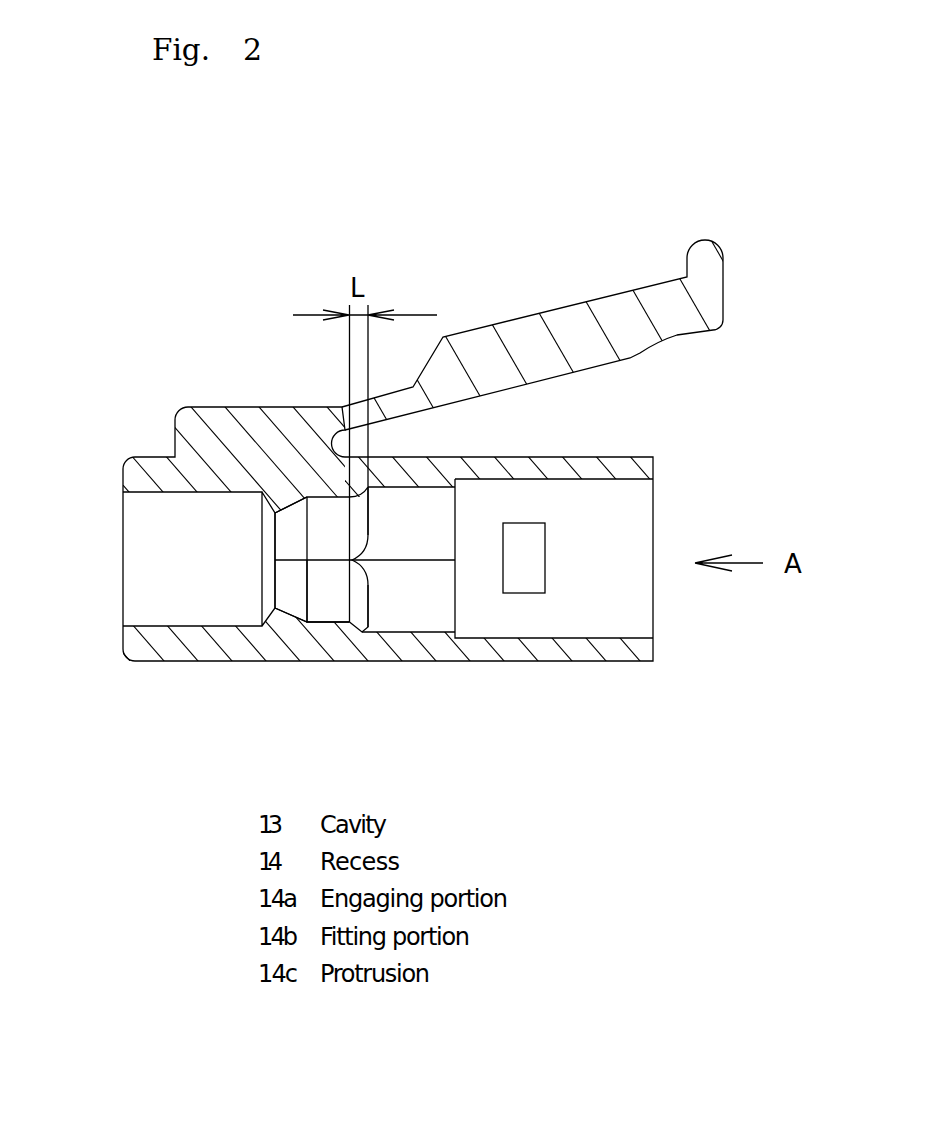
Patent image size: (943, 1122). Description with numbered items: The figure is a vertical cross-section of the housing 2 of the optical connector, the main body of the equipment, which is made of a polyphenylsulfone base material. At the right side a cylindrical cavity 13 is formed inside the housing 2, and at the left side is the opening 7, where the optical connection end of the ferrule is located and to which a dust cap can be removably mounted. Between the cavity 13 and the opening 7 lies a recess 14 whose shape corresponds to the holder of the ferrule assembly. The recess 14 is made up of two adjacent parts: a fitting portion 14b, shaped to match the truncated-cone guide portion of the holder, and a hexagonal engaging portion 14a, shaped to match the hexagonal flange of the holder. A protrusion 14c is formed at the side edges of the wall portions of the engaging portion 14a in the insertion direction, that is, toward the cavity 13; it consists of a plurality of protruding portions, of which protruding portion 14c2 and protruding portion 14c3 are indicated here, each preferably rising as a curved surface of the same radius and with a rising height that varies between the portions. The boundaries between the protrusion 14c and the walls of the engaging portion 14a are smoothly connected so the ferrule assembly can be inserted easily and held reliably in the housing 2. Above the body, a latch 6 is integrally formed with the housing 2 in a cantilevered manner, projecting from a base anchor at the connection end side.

The housing 2 is at (329, 257).
The latch 6 is at (555, 327).
The opening 7 is at (145, 540).
The cavity 13 is at (593, 520).
The recess 14 is at (323, 527).
The engaging portion 14a is at (327, 603).
The fitting portion 14b is at (293, 595).
The protrusion 14c is at (358, 612).
The protruding portion 14c2 is at (360, 530).
The protruding portion 14c3 is at (360, 580).